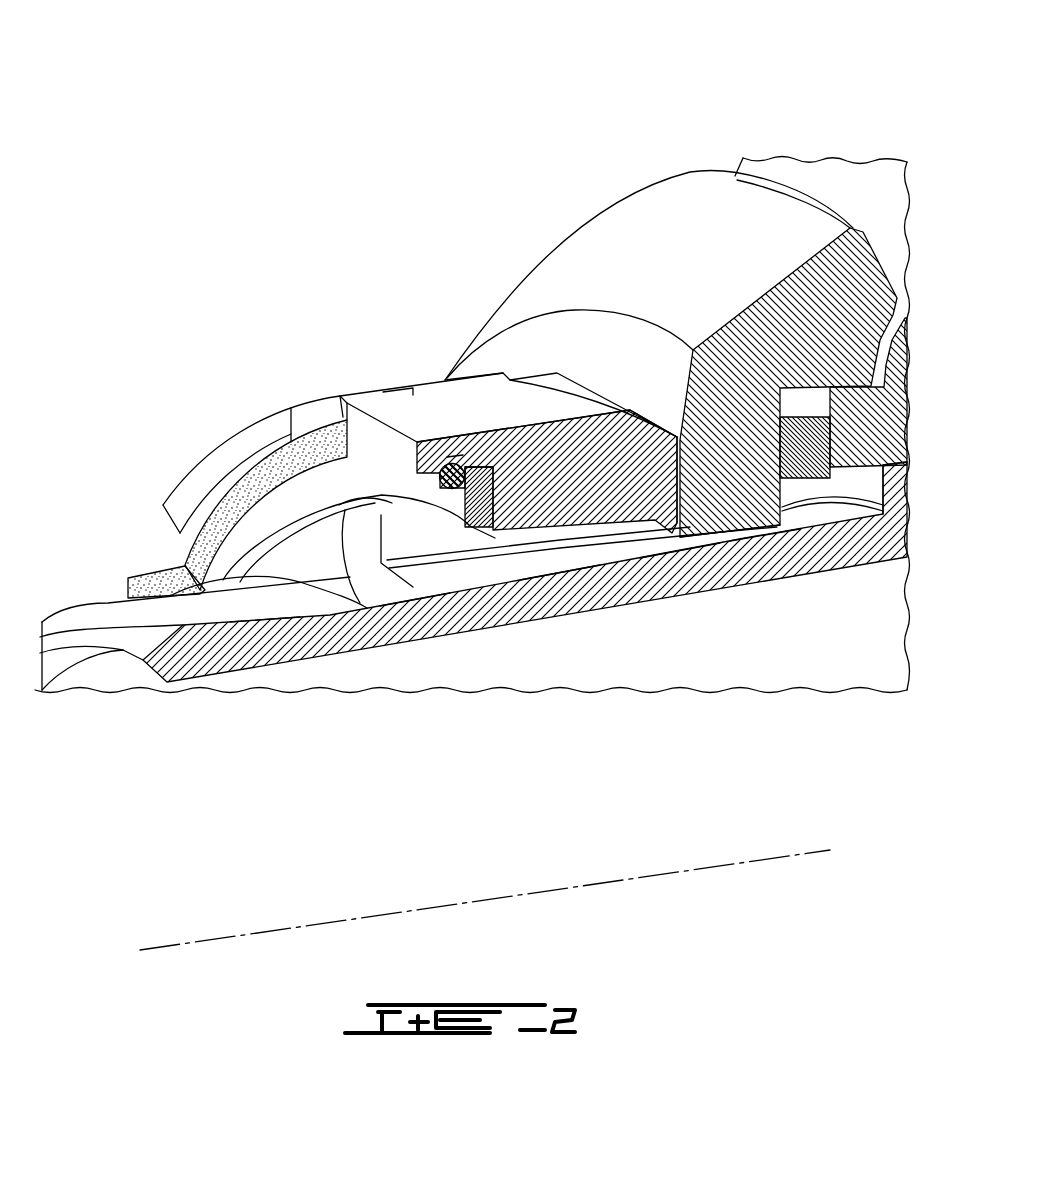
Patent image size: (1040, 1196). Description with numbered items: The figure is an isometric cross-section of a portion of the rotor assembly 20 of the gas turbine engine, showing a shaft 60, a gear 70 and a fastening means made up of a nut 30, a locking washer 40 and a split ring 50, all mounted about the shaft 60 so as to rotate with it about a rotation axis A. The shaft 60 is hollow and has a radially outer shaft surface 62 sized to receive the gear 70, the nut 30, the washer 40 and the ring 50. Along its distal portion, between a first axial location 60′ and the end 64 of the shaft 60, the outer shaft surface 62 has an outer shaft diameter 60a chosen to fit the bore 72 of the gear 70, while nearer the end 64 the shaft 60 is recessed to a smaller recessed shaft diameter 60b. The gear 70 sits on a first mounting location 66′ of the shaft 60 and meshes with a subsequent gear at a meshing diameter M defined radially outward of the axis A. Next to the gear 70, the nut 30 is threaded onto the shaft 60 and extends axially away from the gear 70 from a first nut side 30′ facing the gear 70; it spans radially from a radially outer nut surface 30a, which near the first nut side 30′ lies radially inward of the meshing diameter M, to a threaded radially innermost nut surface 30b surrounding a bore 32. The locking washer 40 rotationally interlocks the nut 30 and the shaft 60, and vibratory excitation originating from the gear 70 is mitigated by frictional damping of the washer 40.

The rotor assembly 20 is at (163, 161).
The nut 30 is at (292, 390).
The radially outer nut surface 30a is at (407, 412).
The radially innermost nut surface 30b is at (520, 542).
The first nut side 30′ is at (690, 468).
The bore 32 is at (692, 520).
The locking washer 40 is at (287, 498).
The split ring 50 is at (180, 563).
The shaft 60 is at (95, 602).
The outer shaft diameter 60a is at (343, 520).
The recessed shaft diameter 60b is at (165, 604).
The first axial location 60′ is at (883, 548).
The radially outer shaft surface 62 is at (357, 607).
The end of the shaft 64 is at (135, 665).
The first mounting location 66′ is at (763, 545).
The gear 70 is at (535, 238).
The bore of the gear 72 is at (750, 543).
The meshing diameter M is at (518, 320).
The rotation axis A is at (783, 856).